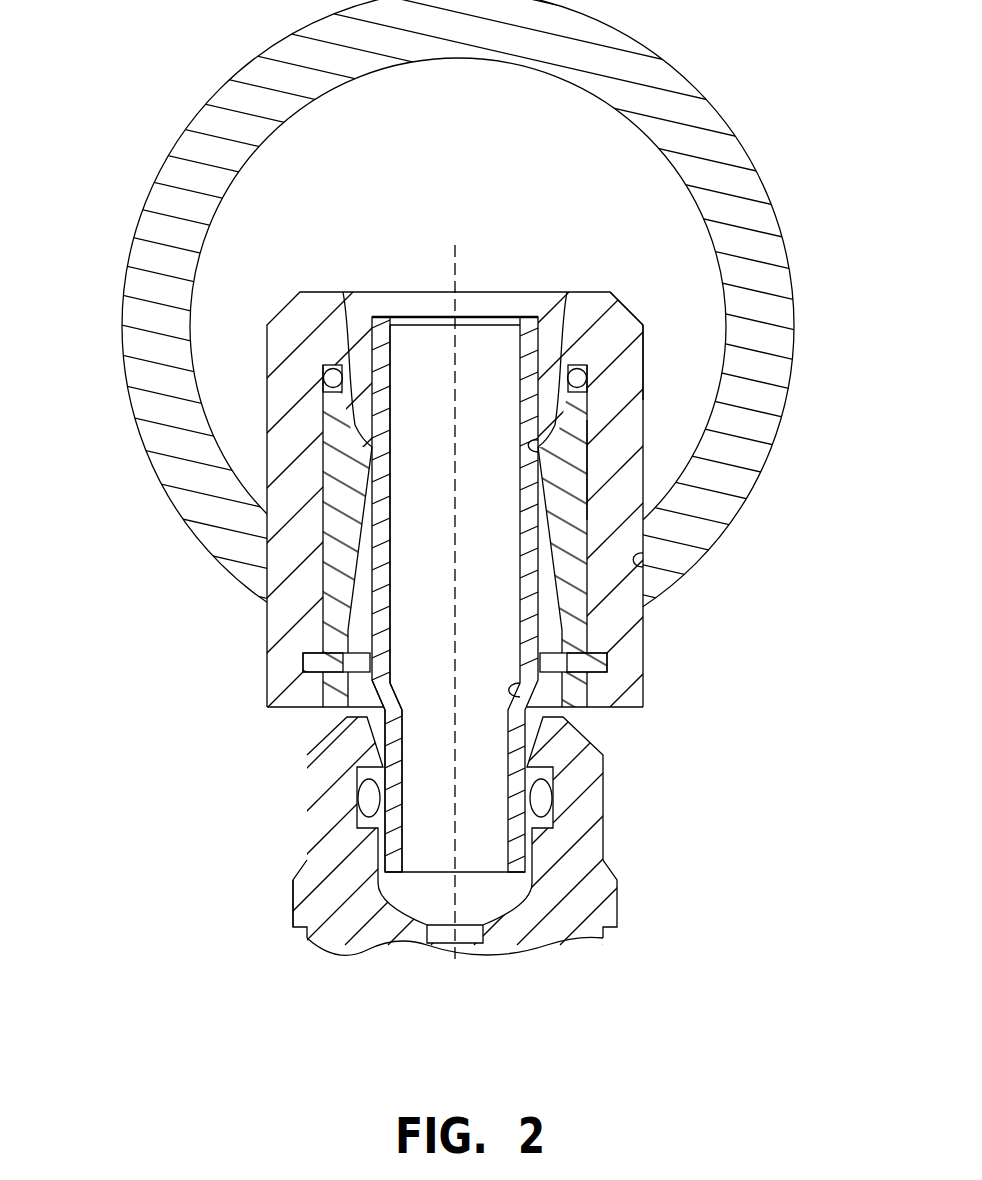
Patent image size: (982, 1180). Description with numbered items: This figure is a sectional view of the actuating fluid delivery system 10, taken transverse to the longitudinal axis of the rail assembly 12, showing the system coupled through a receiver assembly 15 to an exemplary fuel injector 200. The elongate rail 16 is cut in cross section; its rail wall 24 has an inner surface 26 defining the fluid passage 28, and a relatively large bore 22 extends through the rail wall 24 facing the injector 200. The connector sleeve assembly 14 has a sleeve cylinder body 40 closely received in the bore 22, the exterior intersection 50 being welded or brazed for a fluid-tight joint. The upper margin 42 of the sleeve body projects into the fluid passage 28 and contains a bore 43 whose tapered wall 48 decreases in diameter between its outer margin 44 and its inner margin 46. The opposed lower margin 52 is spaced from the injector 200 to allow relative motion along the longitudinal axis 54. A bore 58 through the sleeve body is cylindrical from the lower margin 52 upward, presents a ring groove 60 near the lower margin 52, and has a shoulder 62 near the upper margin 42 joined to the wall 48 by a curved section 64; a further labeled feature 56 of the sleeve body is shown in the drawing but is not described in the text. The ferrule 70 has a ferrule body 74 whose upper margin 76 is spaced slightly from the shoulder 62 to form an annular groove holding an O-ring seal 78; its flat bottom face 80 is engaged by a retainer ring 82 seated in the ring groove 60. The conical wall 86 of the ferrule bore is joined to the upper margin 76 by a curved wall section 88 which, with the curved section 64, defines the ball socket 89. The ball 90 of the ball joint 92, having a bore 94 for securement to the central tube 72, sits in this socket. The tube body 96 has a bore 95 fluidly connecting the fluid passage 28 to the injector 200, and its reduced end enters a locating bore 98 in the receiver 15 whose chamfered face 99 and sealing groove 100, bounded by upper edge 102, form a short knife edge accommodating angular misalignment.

The actuating fluid delivery system 10 is at (126, 196).
The rail assembly 12 is at (454, 408).
The connector sleeve assembly 14 is at (340, 680).
The receiver assembly 15 is at (458, 856).
The elongate rail 16 is at (218, 84).
The bore 22 is at (640, 560).
The rail wall 24 is at (180, 470).
The inner surface 26 is at (640, 133).
The fluid passage 28 is at (455, 116).
The sleeve cylinder body 40 is at (303, 660).
The upper margin 42 is at (471, 593).
The bore 43 is at (527, 315).
The outer margin 44 is at (392, 325).
The inner margin 46 is at (366, 320).
The wall 48 is at (393, 325).
The exterior intersection 50 is at (491, 487).
The lower margin 52 is at (608, 712).
The longitudinal axis 54 is at (460, 965).
The right flange wall 56 is at (600, 405).
The bore 58 is at (578, 487).
The ring groove 60 is at (345, 700).
The shoulder 62 is at (625, 345).
The curved section 64 is at (590, 330).
The ferrule 70 is at (577, 437).
The central tube 72 is at (525, 875).
The ferrule body 74 is at (485, 453).
The upper margin 76 is at (325, 382).
The O-ring seal 78 is at (188, 362).
The bottom face 80 is at (603, 655).
The retainer ring 82 is at (378, 705).
The wall 86 is at (350, 540).
The curved wall section 88 is at (587, 383).
The ball socket 89 is at (535, 446).
The ball 90 is at (338, 360).
The ball joint 92 is at (352, 365).
The bore 94 is at (548, 340).
The bore 95 is at (472, 567).
The tube body 96 is at (553, 800).
The locating bore 98 is at (400, 762).
The chamfered face 99 is at (402, 732).
The sealing groove 100 is at (512, 690).
The upper edge 102 is at (350, 800).
The fuel injector 200 is at (328, 860).